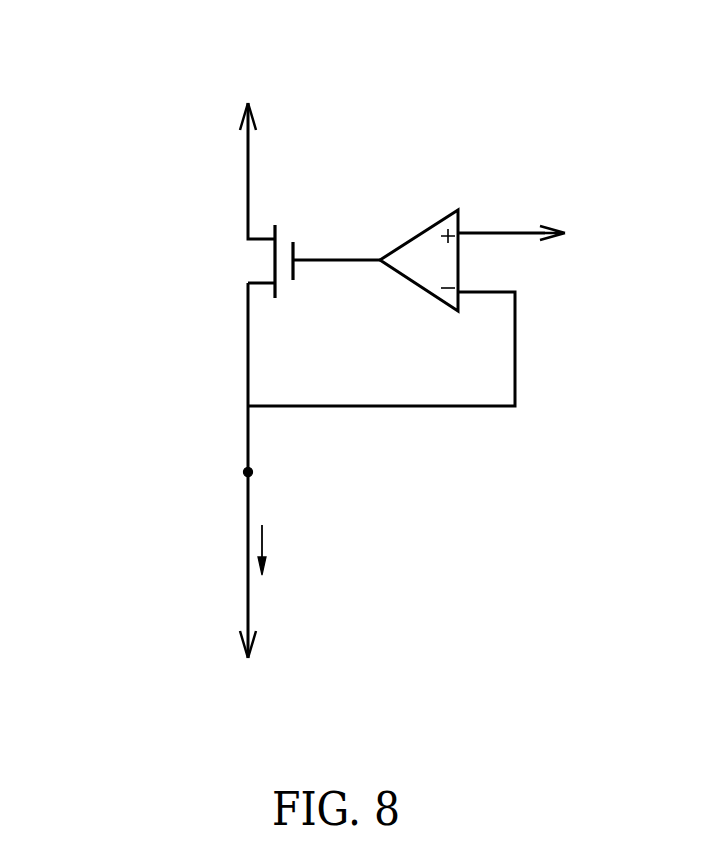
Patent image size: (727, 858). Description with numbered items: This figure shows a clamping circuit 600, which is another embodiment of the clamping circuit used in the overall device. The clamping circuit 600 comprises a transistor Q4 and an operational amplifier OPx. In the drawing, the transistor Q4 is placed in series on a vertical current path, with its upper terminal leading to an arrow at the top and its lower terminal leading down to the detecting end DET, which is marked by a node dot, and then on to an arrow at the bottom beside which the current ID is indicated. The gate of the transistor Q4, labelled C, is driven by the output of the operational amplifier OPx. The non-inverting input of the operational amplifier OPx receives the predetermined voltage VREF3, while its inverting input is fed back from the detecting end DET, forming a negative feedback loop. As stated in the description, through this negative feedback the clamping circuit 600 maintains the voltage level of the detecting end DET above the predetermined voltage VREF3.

The clamping circuit 600 is at (152, 90).
The transistor Q4 is at (243, 262).
The control terminal / gate of transistor C is at (336, 250).
The operational amplifier OPx is at (420, 228).
The predetermined voltage VREF3 is at (547, 236).
The detecting end DET is at (215, 473).
The detection current ID is at (276, 550).